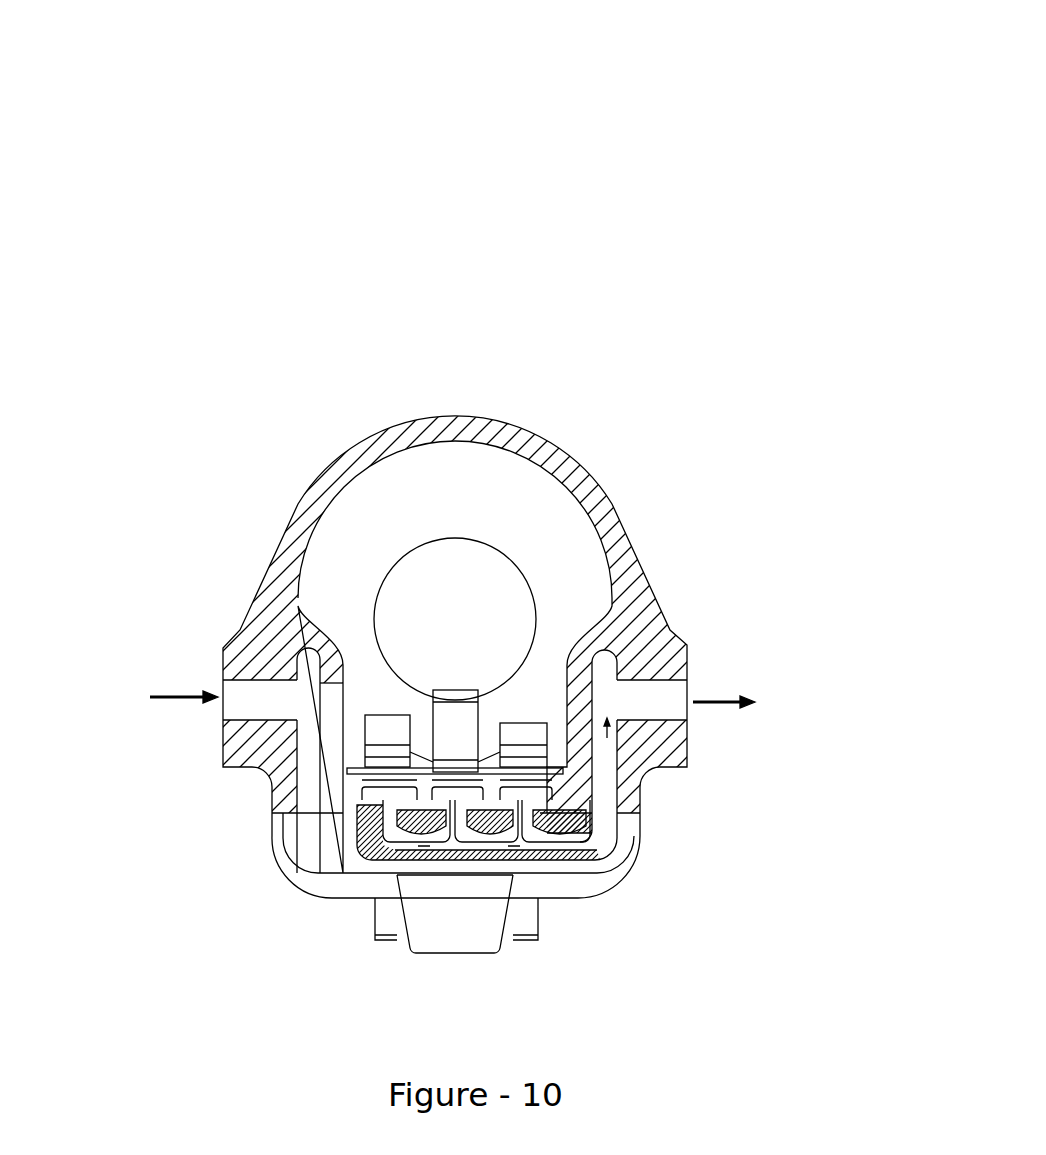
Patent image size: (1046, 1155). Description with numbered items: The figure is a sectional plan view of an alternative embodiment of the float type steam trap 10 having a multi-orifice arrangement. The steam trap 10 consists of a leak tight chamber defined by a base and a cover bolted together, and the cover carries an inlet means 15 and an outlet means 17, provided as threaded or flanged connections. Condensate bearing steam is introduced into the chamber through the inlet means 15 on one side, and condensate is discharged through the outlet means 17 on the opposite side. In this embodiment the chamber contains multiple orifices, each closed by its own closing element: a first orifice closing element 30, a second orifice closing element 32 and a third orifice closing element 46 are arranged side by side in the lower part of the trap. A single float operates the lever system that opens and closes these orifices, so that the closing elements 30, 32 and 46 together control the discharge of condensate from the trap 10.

The steam trap 10 is at (521, 238).
The inlet means 15 is at (245, 705).
The outlet means 17 is at (665, 705).
The first orifice closing element 30 is at (437, 797).
The second orifice closing element 32 is at (515, 797).
The third orifice closing element 46 is at (383, 795).